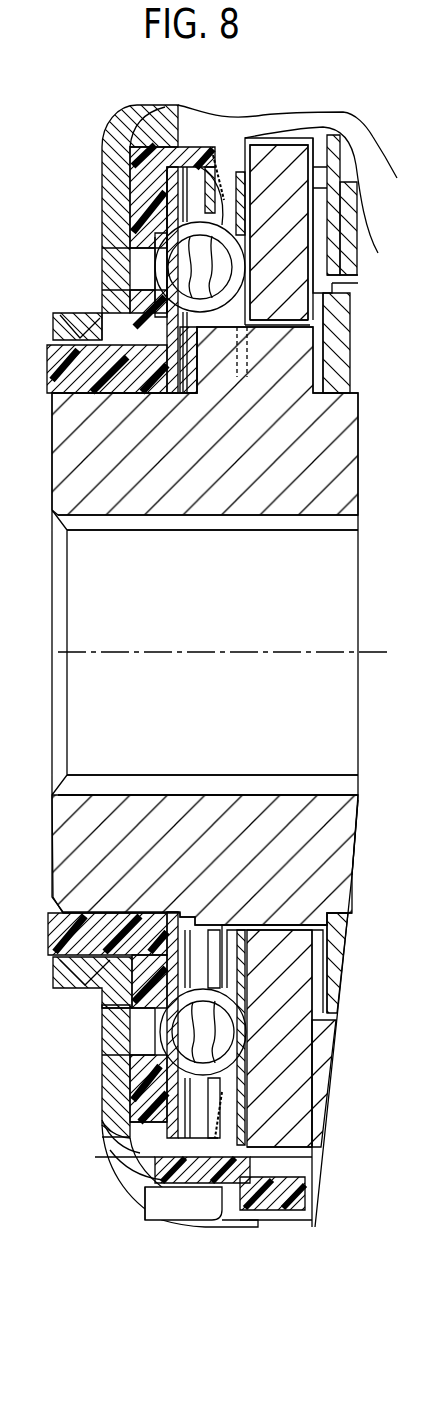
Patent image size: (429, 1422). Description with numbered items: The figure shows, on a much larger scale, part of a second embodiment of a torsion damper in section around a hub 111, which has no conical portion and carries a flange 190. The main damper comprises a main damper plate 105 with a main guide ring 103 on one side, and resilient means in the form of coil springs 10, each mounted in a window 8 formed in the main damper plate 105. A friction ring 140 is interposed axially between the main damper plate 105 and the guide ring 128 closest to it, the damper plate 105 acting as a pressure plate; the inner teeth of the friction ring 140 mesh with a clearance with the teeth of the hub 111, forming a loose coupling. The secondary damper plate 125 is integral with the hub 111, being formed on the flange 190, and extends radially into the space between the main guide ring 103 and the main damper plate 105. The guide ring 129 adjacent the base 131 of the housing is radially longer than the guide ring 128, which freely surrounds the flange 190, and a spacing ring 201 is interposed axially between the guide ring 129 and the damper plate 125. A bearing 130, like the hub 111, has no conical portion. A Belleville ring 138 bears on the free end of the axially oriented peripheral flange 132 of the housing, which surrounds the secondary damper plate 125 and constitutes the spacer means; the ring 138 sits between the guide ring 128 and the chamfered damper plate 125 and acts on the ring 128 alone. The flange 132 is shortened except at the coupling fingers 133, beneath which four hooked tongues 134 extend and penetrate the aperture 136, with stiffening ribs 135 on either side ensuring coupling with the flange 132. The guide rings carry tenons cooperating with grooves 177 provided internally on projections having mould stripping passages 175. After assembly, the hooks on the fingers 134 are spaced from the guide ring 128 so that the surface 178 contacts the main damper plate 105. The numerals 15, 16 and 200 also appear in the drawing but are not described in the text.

The window 8 is at (319, 197).
The coil spring 10 is at (299, 153).
The shaft bore 15 is at (243, 786).
The hub 16 is at (248, 670).
The main guide ring 103 is at (112, 142).
The main damper plate 105 is at (283, 1037).
The hub 111 is at (340, 870).
The secondary damper plate 125 is at (168, 1172).
The guide ring 128 is at (235, 1000).
The guide ring 129 is at (127, 1140).
The bearing 130 is at (80, 988).
The base 131 is at (137, 200).
The peripheral flange 132 is at (167, 143).
The coupling finger 133 is at (300, 1197).
The tongue 134 is at (253, 1160).
The stiffening rib 135 is at (165, 1222).
The aperture 136 is at (288, 1152).
The Belleville ring 138 is at (220, 157).
The friction ring 140 is at (243, 1082).
The mould stripping passage 175 is at (127, 1170).
The groove 177 is at (207, 1197).
The surface 178 is at (258, 1222).
The flange 190 is at (295, 343).
The annular gap 200 is at (102, 260).
The spacing ring 201 is at (192, 945).